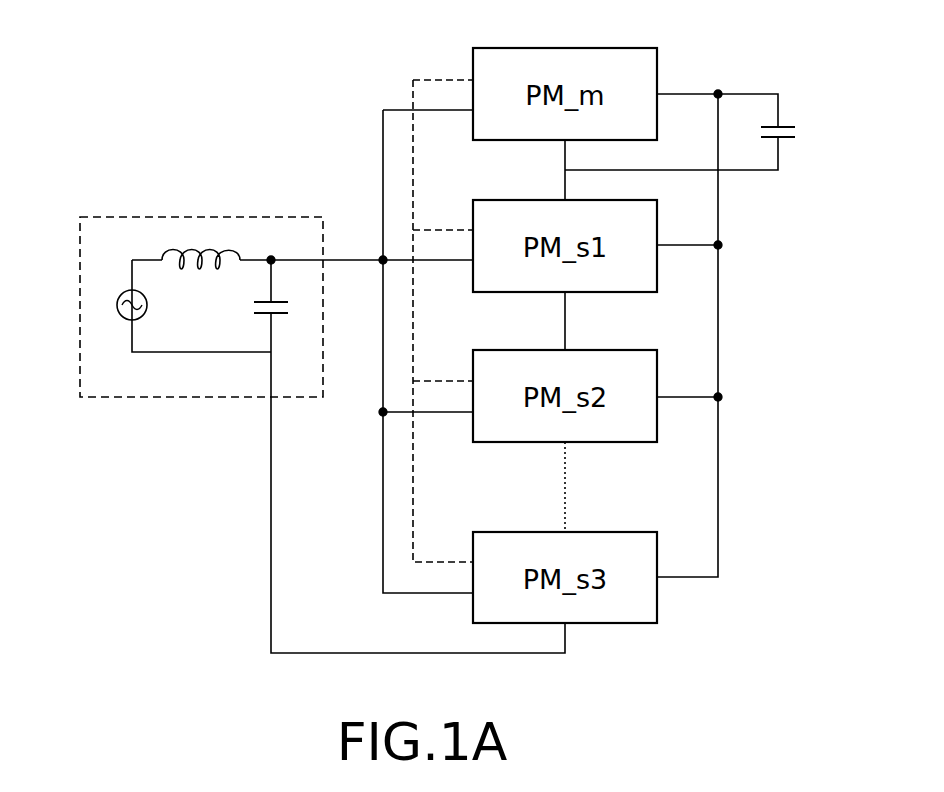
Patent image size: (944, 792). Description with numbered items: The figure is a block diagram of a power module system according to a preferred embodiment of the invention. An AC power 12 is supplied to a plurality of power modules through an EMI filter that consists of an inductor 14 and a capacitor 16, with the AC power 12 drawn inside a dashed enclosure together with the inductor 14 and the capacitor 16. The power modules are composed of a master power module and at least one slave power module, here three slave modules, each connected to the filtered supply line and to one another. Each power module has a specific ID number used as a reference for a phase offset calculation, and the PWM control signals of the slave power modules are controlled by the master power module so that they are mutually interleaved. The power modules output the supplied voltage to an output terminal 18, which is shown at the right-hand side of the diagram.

The AC power 12 is at (117, 305).
The inductor 14 is at (183, 250).
The capacitor 16 is at (278, 317).
The output terminal 18 is at (783, 117).